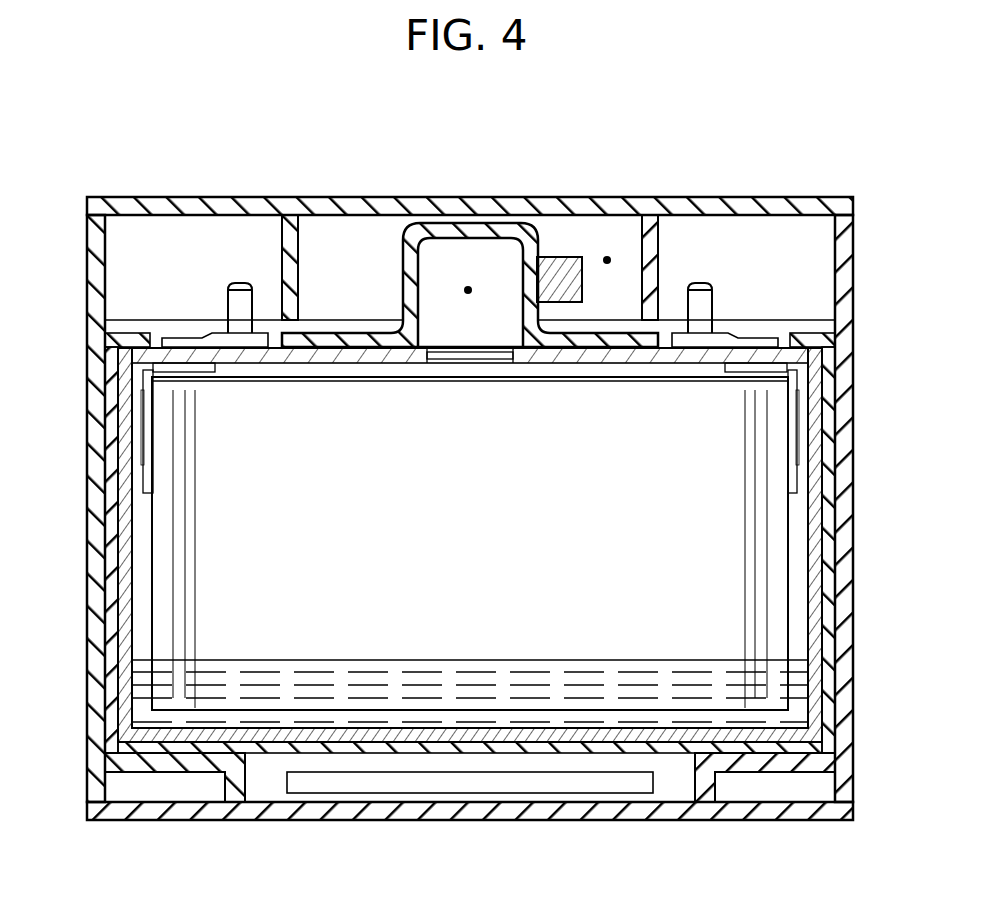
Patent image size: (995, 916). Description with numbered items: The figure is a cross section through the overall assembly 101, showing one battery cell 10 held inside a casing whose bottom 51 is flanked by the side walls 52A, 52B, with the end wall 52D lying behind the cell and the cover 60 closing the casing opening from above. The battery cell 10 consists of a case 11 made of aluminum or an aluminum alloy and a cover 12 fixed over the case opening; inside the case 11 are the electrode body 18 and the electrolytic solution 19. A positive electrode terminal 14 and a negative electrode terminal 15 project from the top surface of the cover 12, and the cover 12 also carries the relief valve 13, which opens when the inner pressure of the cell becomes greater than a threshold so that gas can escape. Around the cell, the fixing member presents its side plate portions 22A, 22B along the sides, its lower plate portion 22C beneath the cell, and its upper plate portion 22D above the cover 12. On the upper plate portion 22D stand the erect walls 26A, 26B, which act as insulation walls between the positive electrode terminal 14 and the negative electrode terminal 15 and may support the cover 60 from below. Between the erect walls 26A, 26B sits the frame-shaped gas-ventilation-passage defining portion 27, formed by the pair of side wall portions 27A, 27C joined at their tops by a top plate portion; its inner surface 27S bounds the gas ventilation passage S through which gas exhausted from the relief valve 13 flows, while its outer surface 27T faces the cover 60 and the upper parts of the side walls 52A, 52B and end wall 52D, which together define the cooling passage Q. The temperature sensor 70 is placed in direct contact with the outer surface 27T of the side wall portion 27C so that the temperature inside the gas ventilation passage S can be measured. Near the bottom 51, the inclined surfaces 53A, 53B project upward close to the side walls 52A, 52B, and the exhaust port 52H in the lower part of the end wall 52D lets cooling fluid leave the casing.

The battery pack 101 is at (150, 178).
The cover 60 is at (792, 207).
The side wall 52A is at (96, 278).
The side wall 52B is at (853, 277).
The end wall 52D is at (211, 273).
The bottom 51 is at (288, 810).
The erect wall 26A is at (292, 270).
The erect wall 26B is at (655, 270).
The gas-ventilation-passage defining portion 27 is at (467, 232).
The inner surface 27S is at (468, 252).
The outer surface 27T is at (500, 227).
The side wall portion 27A is at (413, 283).
The side wall portion 27C is at (528, 283).
The gas ventilation passage S is at (464, 289).
The temperature sensor 70 is at (557, 275).
The cooling passage Q is at (607, 257).
The positive electrode terminal 14 is at (240, 305).
The negative electrode terminal 15 is at (700, 305).
The upper plate portion 22D is at (140, 346).
The cover 12 is at (768, 355).
The relief valve 13 is at (472, 362).
The case 11 is at (813, 432).
The side plate portion 22A is at (110, 540).
The side plate portion 22B is at (827, 527).
The lower plate portion 22C is at (405, 747).
The inclined surface 53A is at (177, 746).
The inclined surface 53B is at (755, 747).
The exhaust port 52H is at (468, 784).
The battery cell 10 is at (557, 610).
The electrode body 18 is at (655, 603).
The electrolytic solution 19 is at (657, 692).